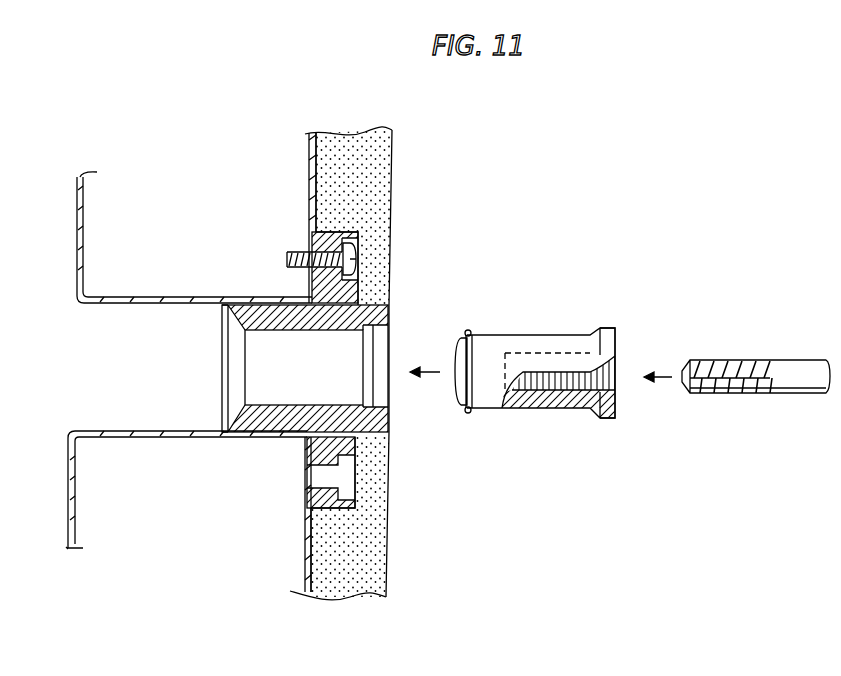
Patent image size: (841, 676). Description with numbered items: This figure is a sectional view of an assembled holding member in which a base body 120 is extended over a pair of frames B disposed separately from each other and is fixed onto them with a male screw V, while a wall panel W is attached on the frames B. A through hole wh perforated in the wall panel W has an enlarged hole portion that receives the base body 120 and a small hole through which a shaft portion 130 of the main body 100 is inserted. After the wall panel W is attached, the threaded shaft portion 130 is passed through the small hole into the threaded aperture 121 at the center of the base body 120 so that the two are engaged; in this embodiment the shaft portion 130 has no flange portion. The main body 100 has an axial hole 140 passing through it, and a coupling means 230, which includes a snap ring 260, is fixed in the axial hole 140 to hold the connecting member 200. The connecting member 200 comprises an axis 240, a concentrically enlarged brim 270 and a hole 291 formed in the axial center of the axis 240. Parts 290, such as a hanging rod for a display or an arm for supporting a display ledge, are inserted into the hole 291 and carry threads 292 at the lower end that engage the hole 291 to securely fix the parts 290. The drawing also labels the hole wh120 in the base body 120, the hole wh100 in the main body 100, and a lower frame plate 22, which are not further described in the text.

The frames B is at (310, 166).
The wall panel W is at (403, 154).
The hole in upper spacer block wh120 is at (353, 233).
The male screw V is at (294, 254).
The threaded aperture 121 is at (302, 297).
The through hole wh is at (403, 292).
The main body 100 is at (306, 371).
The shaft portion 130 is at (222, 415).
The axial hole 140 is at (304, 367).
The hole in anchor body wh100 is at (380, 432).
The lower bracket plate 22 is at (253, 433).
The base body 120 is at (361, 452).
The connecting member 200 is at (613, 355).
The coupling means 230 is at (479, 328).
The snap ring 260 is at (467, 412).
The hole 291 is at (558, 410).
The axis 240 is at (575, 410).
The enlarged brim 270 is at (630, 349).
The parts 290 is at (756, 383).
The threads 292 is at (728, 400).